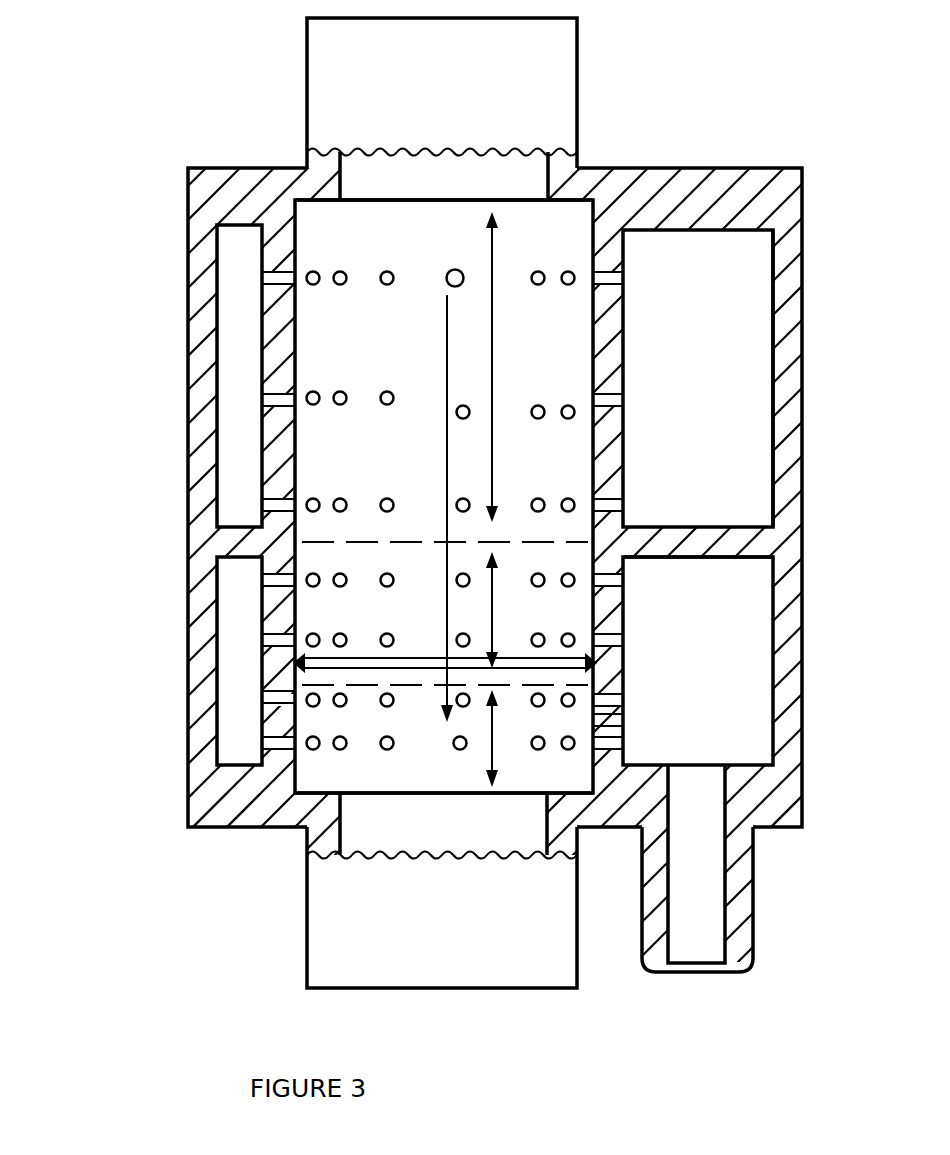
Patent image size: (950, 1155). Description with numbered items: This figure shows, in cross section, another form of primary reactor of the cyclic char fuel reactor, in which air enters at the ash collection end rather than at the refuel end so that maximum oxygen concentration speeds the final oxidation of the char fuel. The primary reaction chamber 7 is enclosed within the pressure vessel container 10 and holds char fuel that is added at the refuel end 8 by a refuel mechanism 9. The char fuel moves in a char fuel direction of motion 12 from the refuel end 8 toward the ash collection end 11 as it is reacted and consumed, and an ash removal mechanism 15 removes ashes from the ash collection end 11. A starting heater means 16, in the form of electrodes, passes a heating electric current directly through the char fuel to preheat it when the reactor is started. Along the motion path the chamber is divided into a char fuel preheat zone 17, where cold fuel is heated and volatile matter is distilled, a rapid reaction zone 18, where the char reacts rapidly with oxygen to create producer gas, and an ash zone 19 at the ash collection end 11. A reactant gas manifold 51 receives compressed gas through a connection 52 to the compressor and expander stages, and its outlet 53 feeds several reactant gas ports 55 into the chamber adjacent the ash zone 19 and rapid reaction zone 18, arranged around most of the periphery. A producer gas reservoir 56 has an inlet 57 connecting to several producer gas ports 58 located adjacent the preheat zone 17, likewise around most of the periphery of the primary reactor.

The primary reaction chamber 7 is at (558, 222).
The refuel end 8 is at (360, 220).
The refuel mechanism 9 is at (527, 98).
The pressure vessel container 10 is at (193, 213).
The ash collection end 11 is at (333, 778).
The char fuel direction of motion 12 is at (447, 445).
The ash removal mechanism 15 is at (330, 937).
The starting heater means 16 is at (292, 268).
The char fuel preheat zone 17 is at (495, 365).
The rapid reaction zone 18 is at (500, 610).
The ash zone 19 is at (492, 745).
The reactant gas manifold 51 is at (237, 743).
The connection 52 is at (693, 915).
The outlet 53 is at (633, 647).
The reactant gas ports 55 is at (292, 652).
The producer gas reservoir 56 is at (235, 305).
The inlet 57 is at (640, 420).
The producer gas ports 58 is at (295, 400).